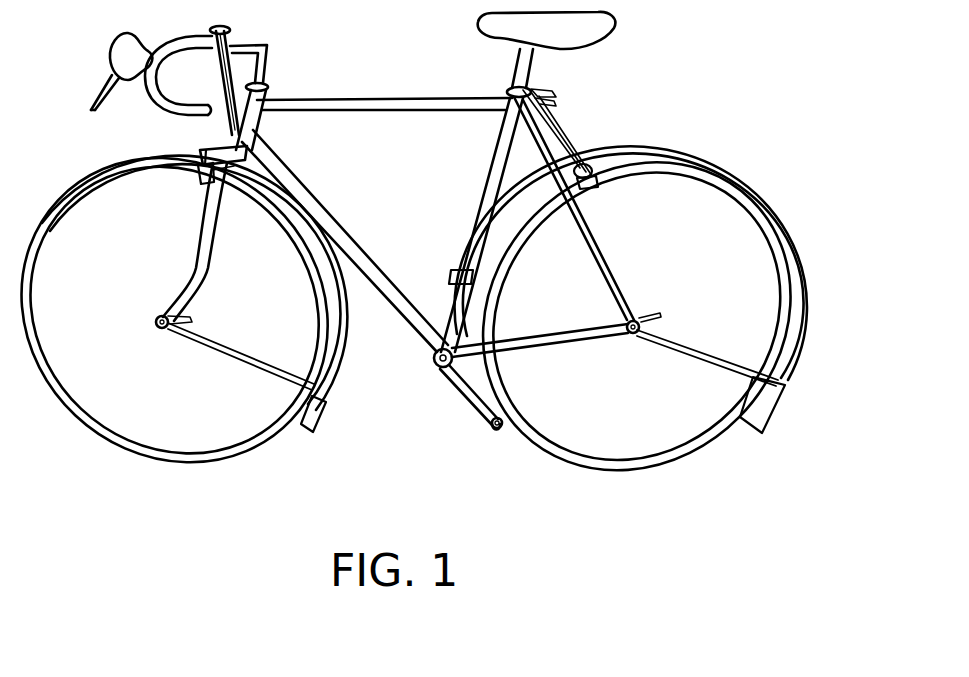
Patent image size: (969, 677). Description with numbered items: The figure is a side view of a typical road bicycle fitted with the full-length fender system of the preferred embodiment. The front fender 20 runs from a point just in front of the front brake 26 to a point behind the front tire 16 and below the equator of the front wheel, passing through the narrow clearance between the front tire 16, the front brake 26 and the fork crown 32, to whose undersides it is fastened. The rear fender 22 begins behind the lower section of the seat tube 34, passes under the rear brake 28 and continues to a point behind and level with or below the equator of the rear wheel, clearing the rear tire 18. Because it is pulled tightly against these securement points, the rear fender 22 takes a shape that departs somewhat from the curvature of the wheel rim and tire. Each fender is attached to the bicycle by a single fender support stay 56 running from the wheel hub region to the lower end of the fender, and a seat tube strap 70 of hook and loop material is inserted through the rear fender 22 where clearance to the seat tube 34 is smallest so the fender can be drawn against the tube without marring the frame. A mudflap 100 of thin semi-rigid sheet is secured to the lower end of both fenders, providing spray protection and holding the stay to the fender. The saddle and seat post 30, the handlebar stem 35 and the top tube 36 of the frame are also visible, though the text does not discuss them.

The front tire 16 is at (268, 430).
The rear tire 18 is at (683, 453).
The front fender 20 is at (340, 320).
The rear fender 22 is at (780, 222).
The front brake 26 is at (200, 176).
The rear brake 28 is at (588, 181).
The seat post 30 is at (533, 67).
The fork crown 32 is at (234, 183).
The seat tube 34 is at (493, 190).
The handlebar stem 35 is at (247, 48).
The top tube 36 is at (365, 102).
The fender support stay 56 is at (222, 355).
The seat tube strap 70 is at (453, 272).
The mudflap 100 is at (323, 417).